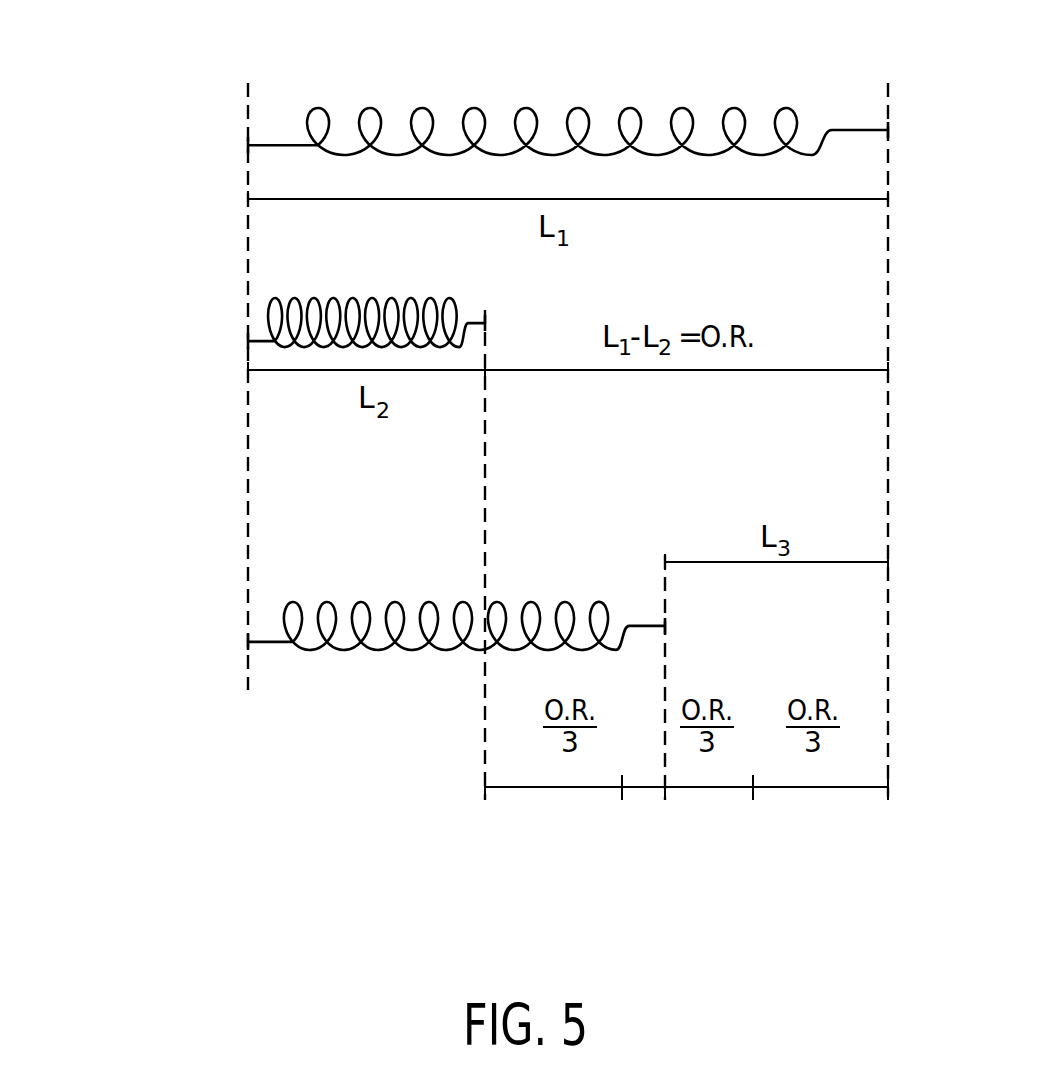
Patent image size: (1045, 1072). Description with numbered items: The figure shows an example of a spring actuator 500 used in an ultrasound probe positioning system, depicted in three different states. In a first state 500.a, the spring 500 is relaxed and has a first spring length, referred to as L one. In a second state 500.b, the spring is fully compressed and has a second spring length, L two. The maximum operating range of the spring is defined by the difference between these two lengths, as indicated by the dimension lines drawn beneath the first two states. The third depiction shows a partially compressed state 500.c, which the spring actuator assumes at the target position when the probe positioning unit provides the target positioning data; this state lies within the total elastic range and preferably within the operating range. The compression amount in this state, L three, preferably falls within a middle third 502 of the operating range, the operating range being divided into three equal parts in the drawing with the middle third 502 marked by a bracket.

The spring actuator 500 is at (422, 108).
The first state 500.a is at (240, 147).
The second state 500.b is at (240, 333).
The partially compressed state 500.c is at (240, 621).
The middle third of the operating range 502 is at (753, 813).